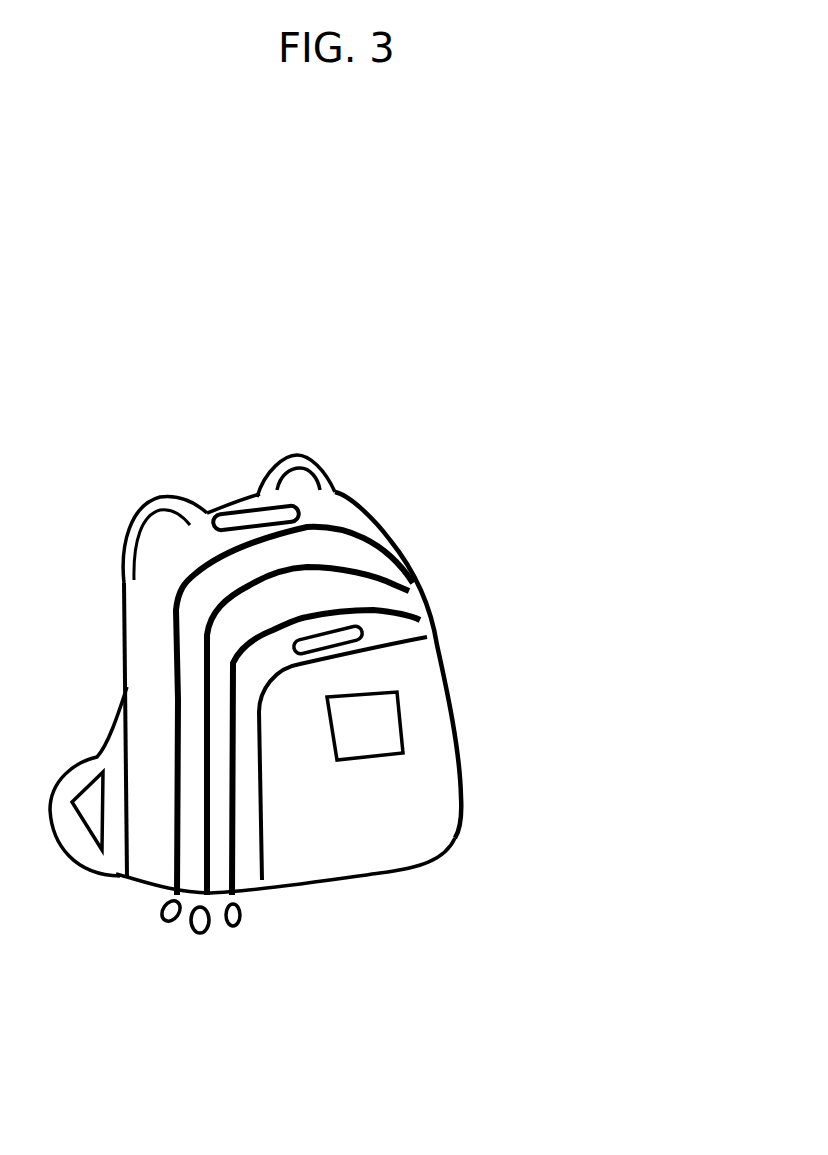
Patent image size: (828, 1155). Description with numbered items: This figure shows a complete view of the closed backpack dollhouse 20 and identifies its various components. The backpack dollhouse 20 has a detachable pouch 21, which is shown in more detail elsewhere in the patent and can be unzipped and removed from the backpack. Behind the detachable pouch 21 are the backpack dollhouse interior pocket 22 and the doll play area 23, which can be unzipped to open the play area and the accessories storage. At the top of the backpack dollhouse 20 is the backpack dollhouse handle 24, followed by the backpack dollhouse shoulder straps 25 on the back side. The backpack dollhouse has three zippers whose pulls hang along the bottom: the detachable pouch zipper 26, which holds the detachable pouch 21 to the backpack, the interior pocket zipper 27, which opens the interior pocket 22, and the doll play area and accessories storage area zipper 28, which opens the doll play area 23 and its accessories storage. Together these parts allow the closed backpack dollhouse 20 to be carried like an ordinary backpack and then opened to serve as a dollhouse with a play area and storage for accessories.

The backpack dollhouse 20 is at (478, 850).
The detachable pouch 21 is at (478, 738).
The interior pocket 22 is at (455, 667).
The doll play area 23 is at (425, 584).
The backpack dollhouse handle 24 is at (320, 512).
The backpack dollhouse shoulder straps 25 is at (337, 467).
The detachable pouch zipper 26 is at (243, 950).
The interior pocket zipper 27 is at (203, 950).
The doll play area and accessories storage area zipper 28 is at (160, 950).